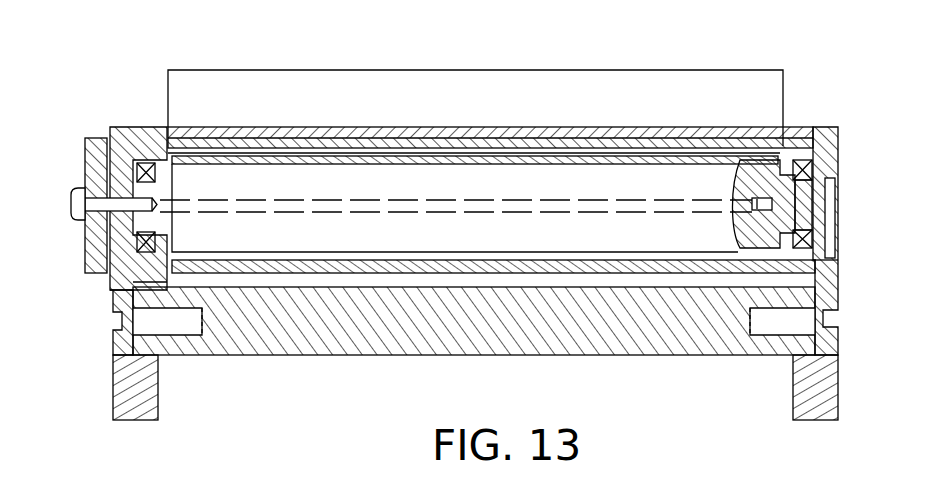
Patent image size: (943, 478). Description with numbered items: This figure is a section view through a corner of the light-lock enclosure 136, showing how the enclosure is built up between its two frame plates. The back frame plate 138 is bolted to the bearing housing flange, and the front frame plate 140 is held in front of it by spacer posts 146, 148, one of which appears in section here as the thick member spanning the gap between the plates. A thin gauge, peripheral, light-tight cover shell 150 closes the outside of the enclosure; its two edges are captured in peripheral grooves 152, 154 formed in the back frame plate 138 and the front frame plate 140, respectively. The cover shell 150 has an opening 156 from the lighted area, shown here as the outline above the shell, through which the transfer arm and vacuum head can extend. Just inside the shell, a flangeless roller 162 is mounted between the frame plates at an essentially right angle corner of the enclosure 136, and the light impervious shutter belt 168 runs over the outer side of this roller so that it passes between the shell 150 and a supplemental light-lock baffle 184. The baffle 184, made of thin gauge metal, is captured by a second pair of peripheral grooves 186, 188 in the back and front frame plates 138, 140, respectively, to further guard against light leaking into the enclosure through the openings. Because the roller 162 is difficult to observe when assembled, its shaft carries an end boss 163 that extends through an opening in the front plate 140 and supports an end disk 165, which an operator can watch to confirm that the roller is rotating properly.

The light-lock enclosure 136 is at (110, 378).
The back frame plate 138 is at (808, 388).
The front frame plate 140 is at (144, 398).
The spacer post 146 is at (582, 340).
The spacer post 148 is at (474, 321).
The cover shell 150 is at (787, 140).
The peripheral groove 152 is at (150, 127).
The peripheral groove 154 is at (815, 128).
The opening 156 is at (375, 68).
The flangeless roller 162 is at (495, 239).
The end boss 163 is at (100, 176).
The end disk 165 is at (100, 248).
The shutter belt 168 is at (470, 156).
The supplemental light-lock baffle 184 is at (575, 264).
The peripheral groove 186 is at (115, 282).
The peripheral groove 188 is at (836, 270).